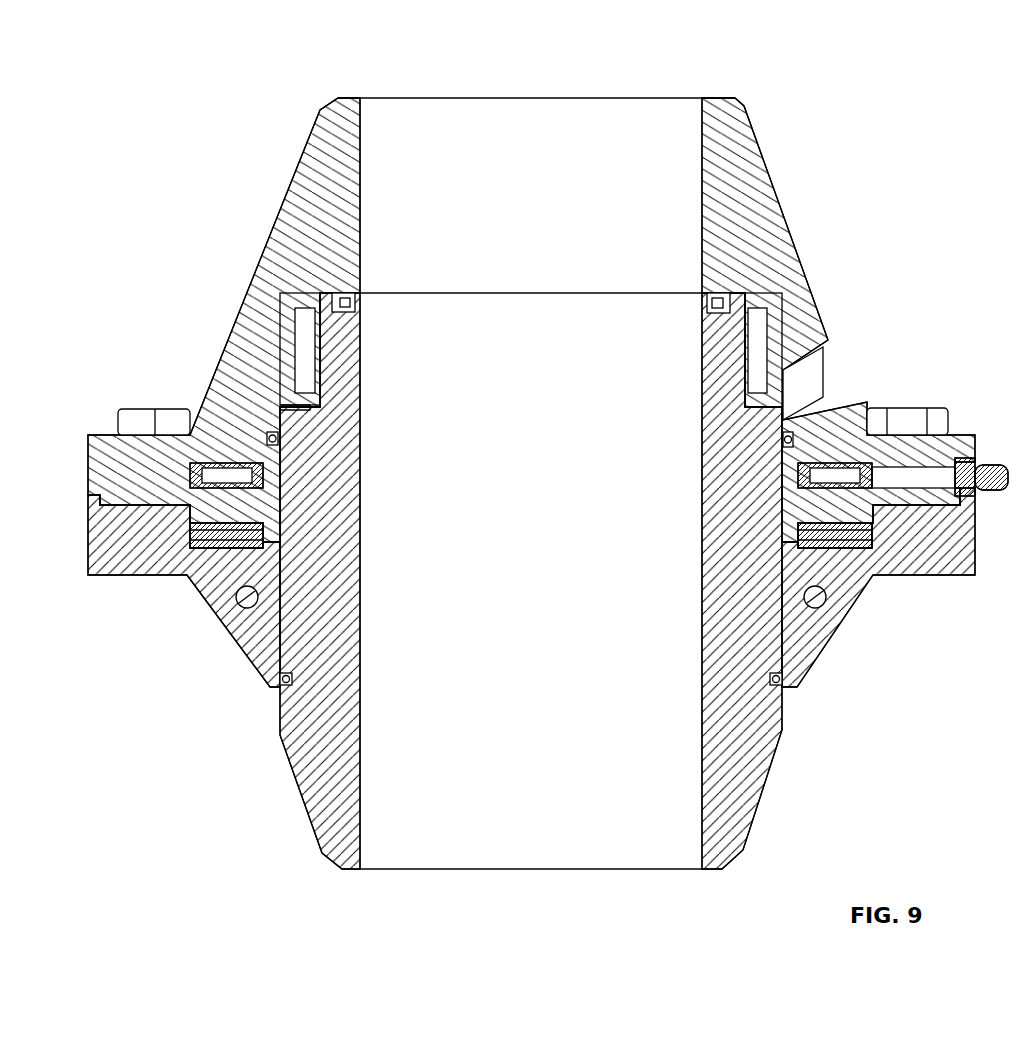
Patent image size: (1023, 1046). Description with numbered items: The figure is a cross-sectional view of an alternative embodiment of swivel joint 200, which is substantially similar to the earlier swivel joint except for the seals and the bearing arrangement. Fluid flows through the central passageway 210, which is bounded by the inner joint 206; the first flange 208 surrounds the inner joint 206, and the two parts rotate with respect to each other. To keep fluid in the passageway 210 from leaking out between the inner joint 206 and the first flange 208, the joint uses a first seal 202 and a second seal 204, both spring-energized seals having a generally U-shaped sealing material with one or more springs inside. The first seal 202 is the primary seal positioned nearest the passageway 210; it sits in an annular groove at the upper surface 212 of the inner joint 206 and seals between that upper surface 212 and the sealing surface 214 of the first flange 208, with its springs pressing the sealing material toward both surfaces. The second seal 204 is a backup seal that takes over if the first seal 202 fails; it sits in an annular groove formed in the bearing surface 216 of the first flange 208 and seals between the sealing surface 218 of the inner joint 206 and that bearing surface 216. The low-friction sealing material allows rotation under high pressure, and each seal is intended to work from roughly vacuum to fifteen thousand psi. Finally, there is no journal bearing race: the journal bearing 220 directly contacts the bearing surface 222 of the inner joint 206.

The swivel joint 200 is at (928, 42).
The first seal 202 is at (707, 300).
The second seal 204 is at (782, 440).
The inner joint 206 is at (700, 590).
The first flange 208 is at (760, 208).
The passageway 210 is at (362, 132).
The upper surface 212 is at (740, 292).
The sealing surface 214 is at (325, 295).
The bearing surface 216 is at (280, 313).
The sealing surface 218 is at (283, 418).
The journal bearing 220 is at (748, 365).
The bearing surface 222 is at (752, 333).